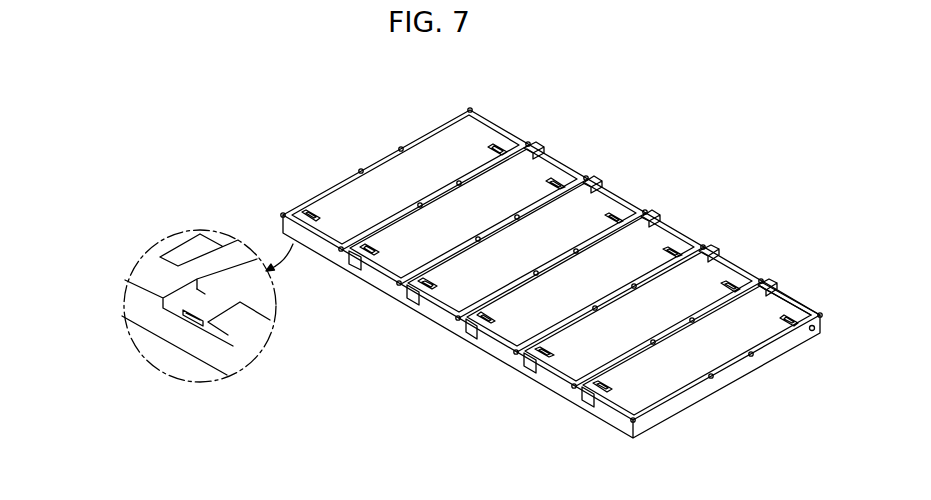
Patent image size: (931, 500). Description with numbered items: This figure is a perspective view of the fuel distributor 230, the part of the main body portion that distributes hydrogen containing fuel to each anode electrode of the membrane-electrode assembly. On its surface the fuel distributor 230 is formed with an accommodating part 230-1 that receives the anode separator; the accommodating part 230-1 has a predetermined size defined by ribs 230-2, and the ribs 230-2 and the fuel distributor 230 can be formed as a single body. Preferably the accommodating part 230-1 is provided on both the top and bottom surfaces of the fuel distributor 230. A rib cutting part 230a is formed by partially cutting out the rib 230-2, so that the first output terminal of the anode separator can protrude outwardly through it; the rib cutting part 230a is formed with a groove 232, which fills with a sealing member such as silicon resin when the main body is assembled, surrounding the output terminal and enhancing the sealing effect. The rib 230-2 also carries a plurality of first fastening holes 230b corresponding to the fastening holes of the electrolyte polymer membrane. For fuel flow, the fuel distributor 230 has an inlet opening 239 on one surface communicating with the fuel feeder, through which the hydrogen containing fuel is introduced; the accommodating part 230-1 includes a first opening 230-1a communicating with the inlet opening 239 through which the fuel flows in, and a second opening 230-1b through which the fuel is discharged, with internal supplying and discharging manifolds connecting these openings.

The fuel distributor 230 is at (346, 111).
The rib cutting part 230a is at (775, 289).
The first fastening holes 230b is at (532, 143).
The accommodating part 230-1 is at (705, 366).
The ribs 230-2 is at (628, 203).
The first opening 230-1a is at (843, 276).
The second opening 230-1b is at (586, 398).
The groove 232 is at (180, 318).
The inlet opening 239 is at (812, 332).